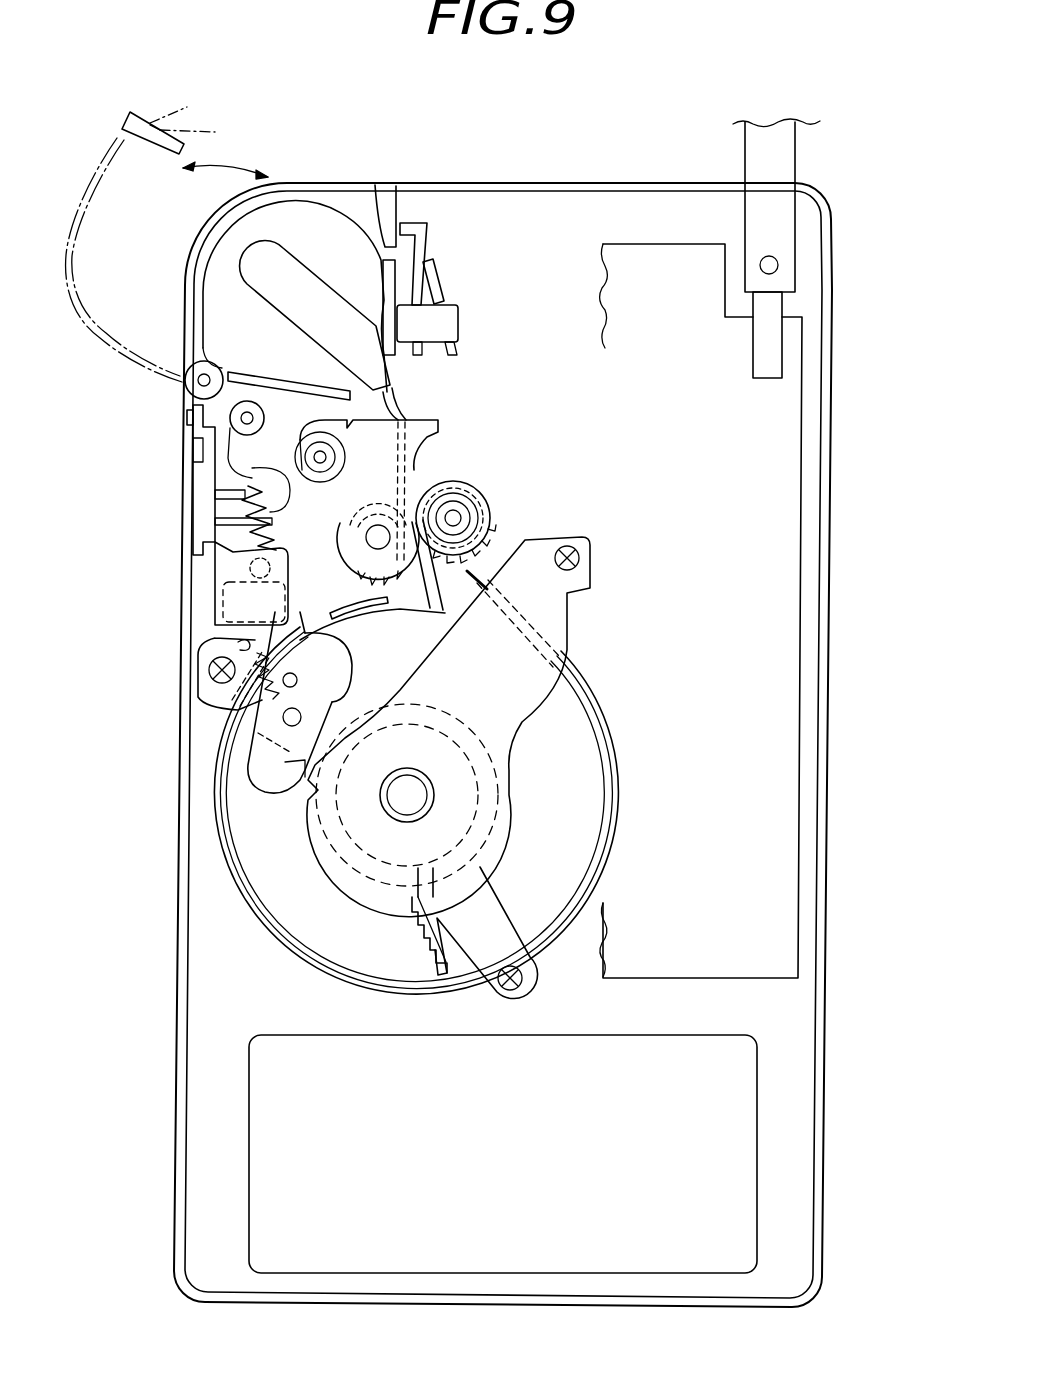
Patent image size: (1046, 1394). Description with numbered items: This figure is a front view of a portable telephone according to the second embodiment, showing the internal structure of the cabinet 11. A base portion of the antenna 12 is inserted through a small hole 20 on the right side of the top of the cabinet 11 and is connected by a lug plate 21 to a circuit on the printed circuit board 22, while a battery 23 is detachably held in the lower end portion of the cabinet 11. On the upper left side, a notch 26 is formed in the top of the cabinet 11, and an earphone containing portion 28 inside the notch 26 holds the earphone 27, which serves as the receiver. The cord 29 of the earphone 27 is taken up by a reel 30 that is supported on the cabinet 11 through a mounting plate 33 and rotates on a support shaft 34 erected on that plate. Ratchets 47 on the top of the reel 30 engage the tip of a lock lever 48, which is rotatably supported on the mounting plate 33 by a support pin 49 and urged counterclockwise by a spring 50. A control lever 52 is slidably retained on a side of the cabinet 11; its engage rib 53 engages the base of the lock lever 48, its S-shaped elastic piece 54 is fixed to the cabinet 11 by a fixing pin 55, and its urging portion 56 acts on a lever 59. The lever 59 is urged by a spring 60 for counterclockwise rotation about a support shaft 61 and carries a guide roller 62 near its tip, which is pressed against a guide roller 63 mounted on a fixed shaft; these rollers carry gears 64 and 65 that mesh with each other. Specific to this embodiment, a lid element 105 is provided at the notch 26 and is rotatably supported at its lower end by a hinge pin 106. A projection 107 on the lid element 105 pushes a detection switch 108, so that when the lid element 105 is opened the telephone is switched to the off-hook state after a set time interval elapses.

The cabinet 11 is at (832, 864).
The antenna 12 is at (782, 148).
The small hole 20 is at (744, 182).
The lug plate 21 is at (770, 357).
The printed circuit board 22 is at (775, 655).
The battery 23 is at (737, 1111).
The notch 26 is at (393, 183).
The earphone 27 is at (313, 223).
The earphone containing portion 28 is at (222, 328).
The cord 29 is at (397, 393).
The reel 30 is at (567, 857).
The mounting plate 33 is at (510, 683).
The support shaft 34 is at (403, 797).
The ratchets 47 is at (500, 800).
The lock lever 48 is at (327, 662).
The support pin 49 is at (235, 703).
The spring 50 is at (215, 640).
The control lever 52 is at (207, 503).
The engage rib 53 is at (225, 607).
The elastic piece 54 is at (187, 437).
The fixing pin 55 is at (242, 418).
The urging portion 56 is at (278, 515).
The lever 59 is at (430, 437).
The spring 60 is at (278, 548).
The support shaft 61 is at (318, 452).
The guide roller 62 is at (378, 506).
The guide roller 63 is at (493, 513).
The gear 64 is at (390, 600).
The gear 65 is at (477, 487).
The lid element 105 is at (186, 104).
The hinge pin 106 is at (200, 380).
The projection 107 is at (218, 125).
The detection switch 108 is at (445, 280).